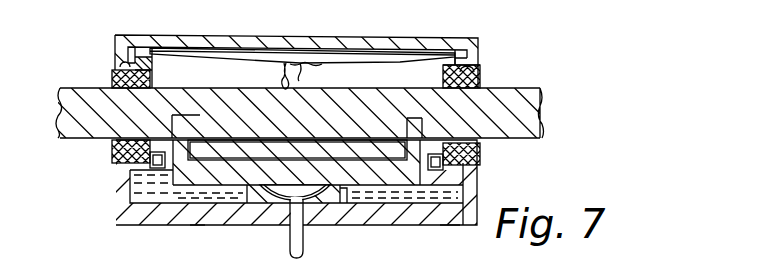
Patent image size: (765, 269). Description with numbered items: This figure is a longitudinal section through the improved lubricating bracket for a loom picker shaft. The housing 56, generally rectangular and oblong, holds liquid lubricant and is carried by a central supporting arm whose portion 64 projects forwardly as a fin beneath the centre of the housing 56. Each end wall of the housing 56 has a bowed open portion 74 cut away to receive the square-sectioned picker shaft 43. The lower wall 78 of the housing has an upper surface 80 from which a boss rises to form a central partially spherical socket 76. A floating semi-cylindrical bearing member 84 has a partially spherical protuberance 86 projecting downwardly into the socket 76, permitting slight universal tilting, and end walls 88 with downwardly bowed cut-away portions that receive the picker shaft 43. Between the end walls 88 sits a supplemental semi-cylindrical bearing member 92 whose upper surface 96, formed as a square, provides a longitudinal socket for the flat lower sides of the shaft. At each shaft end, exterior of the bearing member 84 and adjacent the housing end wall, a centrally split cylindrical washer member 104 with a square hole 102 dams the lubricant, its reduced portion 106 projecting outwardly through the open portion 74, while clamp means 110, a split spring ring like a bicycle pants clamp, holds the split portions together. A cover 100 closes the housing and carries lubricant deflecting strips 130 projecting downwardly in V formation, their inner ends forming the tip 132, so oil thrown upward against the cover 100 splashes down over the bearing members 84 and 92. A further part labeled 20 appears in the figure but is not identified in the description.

The housing 20 is at (412, 223).
The picker shaft 43 is at (540, 100).
The housing 56 is at (197, 226).
The portion 64 is at (288, 248).
The open portion 74 is at (118, 159).
The partially spherical socket 76 is at (344, 190).
The lower wall 78 is at (448, 228).
The upper surface 80 is at (445, 195).
The floating semi-cylindrical bearing member 84 is at (223, 178).
The partially spherical protuberance 86 is at (288, 212).
The end walls 88 is at (178, 157).
The supplemental semi-cylindrical bearing member 92 is at (394, 141).
The upper surface 96 is at (370, 117).
The cover 100 is at (217, 36).
The hole 102 is at (112, 79).
The washer member 104 is at (128, 71).
The reduced portions 106 is at (113, 147).
The clamp means 110 is at (120, 62).
The lubricant deflecting strips 130 is at (372, 52).
The tip 132 is at (302, 57).